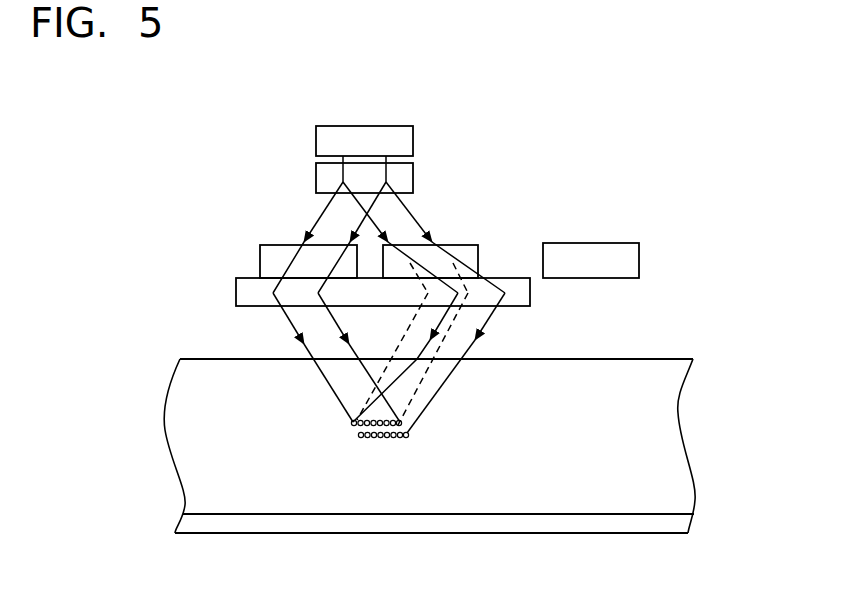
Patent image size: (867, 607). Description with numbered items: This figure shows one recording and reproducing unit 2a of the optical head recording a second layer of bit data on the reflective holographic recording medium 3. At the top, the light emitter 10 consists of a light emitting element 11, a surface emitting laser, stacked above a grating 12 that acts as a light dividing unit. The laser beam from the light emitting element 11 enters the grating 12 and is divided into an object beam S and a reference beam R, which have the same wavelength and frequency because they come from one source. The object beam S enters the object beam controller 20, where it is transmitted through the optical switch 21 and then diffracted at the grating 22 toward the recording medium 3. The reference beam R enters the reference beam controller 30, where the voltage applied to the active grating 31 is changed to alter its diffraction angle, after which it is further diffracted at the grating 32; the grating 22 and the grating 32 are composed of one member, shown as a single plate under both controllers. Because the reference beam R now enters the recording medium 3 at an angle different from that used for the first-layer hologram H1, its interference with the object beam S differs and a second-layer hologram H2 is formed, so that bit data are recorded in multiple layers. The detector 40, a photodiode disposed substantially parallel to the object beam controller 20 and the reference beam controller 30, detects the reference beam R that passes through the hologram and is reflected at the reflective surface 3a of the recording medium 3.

The recording and reproducing unit 2a is at (338, 122).
The light emitter 10 is at (387, 126).
The light emitting element 11 is at (413, 142).
The grating 12 is at (316, 180).
The object beam controller 20 is at (283, 245).
The optical switch 21 is at (260, 265).
The grating 22 is at (236, 293).
The reference beam controller 30 is at (448, 245).
The active grating 31 is at (478, 257).
The grating 32 is at (508, 278).
The detector 40 is at (599, 243).
The object beam S is at (288, 323).
The reference beam R is at (495, 315).
The reflective holographic recording medium 3 is at (645, 427).
The reflective surface 3a is at (657, 525).
The hologram H1 is at (353, 427).
The hologram H2 is at (360, 438).